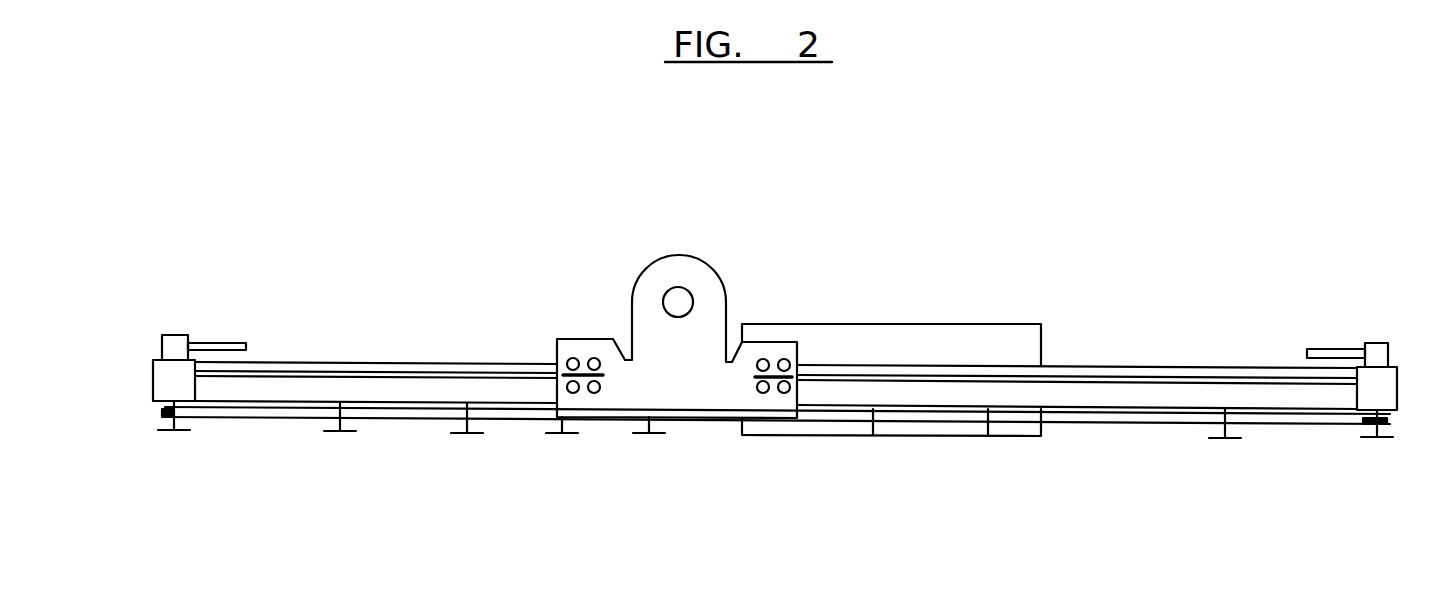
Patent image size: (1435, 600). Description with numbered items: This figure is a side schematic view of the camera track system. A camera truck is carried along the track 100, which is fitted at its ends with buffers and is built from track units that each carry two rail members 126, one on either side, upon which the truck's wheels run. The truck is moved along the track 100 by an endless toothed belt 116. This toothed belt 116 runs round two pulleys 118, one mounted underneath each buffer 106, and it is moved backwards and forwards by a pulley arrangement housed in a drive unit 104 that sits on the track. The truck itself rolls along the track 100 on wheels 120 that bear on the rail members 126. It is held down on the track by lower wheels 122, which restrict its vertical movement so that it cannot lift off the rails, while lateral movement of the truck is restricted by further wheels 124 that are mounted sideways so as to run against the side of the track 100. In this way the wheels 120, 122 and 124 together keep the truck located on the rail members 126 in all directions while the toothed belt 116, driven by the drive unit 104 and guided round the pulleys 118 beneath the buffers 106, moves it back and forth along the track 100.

The track 100 is at (1175, 355).
The drive unit 104 is at (973, 345).
The buffer 106 is at (1385, 348).
The endless toothed belt 116 is at (1267, 423).
The pulleys 118 is at (165, 415).
The wheels 120 is at (763, 358).
The lower wheels 122 is at (762, 394).
The wheels 124 is at (755, 381).
The rail members 126 is at (786, 358).